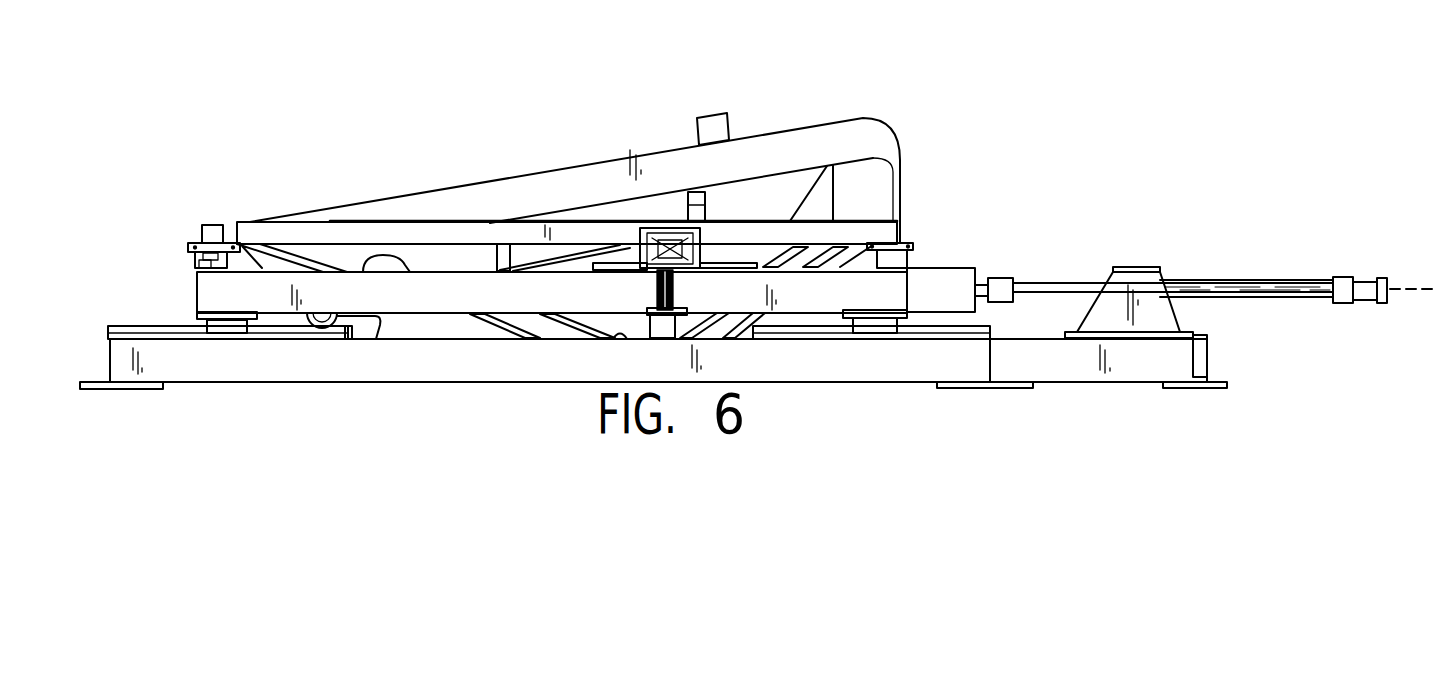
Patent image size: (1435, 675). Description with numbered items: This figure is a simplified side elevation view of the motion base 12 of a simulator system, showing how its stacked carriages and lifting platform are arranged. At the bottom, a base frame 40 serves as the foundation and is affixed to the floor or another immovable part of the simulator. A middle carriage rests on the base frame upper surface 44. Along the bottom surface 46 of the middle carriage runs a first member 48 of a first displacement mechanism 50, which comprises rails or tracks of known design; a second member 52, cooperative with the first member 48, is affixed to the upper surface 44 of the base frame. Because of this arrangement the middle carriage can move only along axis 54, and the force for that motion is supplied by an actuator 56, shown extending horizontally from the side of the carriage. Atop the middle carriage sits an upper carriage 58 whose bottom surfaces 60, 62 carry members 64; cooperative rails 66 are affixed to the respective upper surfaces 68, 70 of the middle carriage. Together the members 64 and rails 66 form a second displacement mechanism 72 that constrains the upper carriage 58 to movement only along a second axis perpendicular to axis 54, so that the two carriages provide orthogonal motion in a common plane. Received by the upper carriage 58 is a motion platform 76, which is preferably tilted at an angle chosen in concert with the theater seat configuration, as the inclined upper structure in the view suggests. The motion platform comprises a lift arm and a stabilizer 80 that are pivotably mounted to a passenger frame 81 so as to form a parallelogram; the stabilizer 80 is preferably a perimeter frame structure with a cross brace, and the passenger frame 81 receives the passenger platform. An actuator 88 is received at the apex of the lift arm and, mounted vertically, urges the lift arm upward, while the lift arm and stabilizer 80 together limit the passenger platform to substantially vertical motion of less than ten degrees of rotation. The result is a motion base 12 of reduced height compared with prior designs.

The motion base 12 is at (912, 113).
The base frame 40 is at (412, 370).
The base frame upper surface 44 is at (620, 333).
The bottom surface 46 is at (378, 320).
The first member 48 is at (232, 333).
The first displacement mechanism 50 is at (187, 314).
The second member 52 is at (132, 327).
The axis 54 is at (1388, 287).
The actuator 56 is at (1268, 282).
The upper carriage 58 is at (470, 222).
The bottom surface 60 is at (198, 243).
The bottom surface 62 is at (910, 247).
The members 64 is at (237, 243).
The cooperative rails 66 is at (217, 257).
The upper surface 68 is at (199, 263).
The upper surface 70 is at (907, 267).
The second displacement mechanism 72 is at (197, 212).
The motion platform 76 is at (655, 102).
The stabilizer 80 is at (410, 275).
The passenger frame 81 is at (790, 137).
The actuator 88 is at (713, 195).